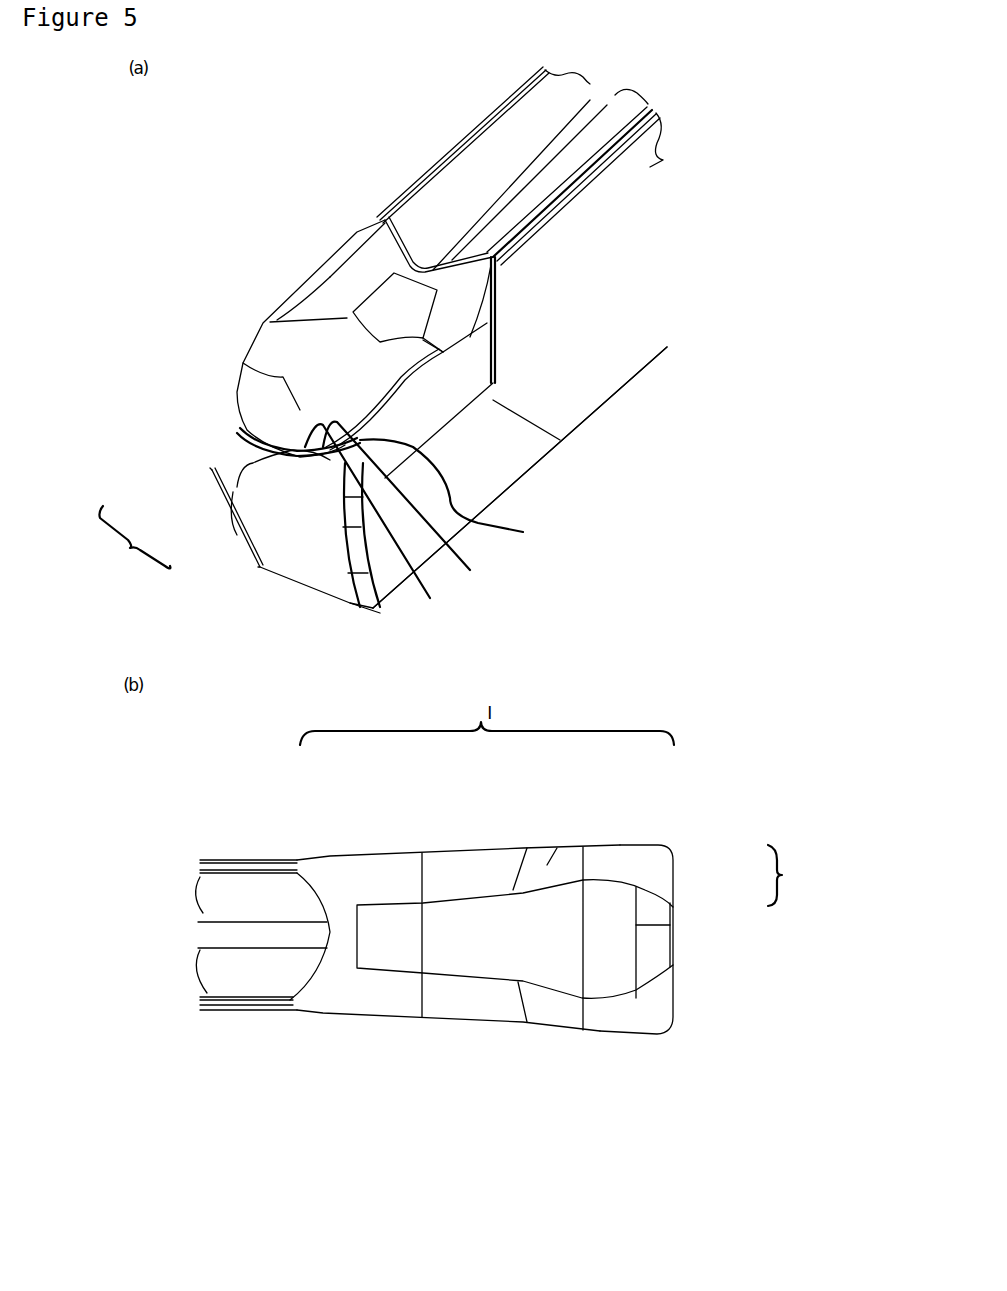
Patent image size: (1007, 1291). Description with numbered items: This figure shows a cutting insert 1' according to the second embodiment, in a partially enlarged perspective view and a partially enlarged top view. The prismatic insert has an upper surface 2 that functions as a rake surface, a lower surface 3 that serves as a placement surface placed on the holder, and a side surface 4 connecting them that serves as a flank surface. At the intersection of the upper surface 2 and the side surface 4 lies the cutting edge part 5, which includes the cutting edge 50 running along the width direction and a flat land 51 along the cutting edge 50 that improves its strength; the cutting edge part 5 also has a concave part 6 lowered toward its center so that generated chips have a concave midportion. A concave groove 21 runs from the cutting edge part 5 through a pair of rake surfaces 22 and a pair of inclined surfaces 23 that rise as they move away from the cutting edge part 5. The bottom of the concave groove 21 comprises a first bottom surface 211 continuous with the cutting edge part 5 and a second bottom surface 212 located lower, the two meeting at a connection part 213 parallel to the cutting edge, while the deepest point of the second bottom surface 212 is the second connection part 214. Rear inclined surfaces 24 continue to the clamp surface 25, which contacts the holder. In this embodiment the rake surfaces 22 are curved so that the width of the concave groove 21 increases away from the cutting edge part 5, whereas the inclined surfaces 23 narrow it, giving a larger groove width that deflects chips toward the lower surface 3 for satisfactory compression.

The cutting insert 1' is at (477, 549).
The upper surface 2 is at (262, 296).
The concave groove 21 is at (343, 367).
The rake surface 22 is at (220, 403).
The inclined surface 23 is at (288, 337).
The rear inclined surface 24 is at (457, 307).
The clamp surface 25 is at (523, 178).
The first bottom surface 211 is at (733, 1030).
The second bottom surface 212 is at (733, 1063).
The connection part 213 is at (235, 418).
The second connection part 214 is at (270, 387).
The lower surface 3 is at (517, 487).
The side surface 4 is at (585, 320).
The cutting edge part 5 is at (448, 706).
The cutting edge 50 is at (185, 450).
The land 51 is at (243, 497).
The concave part 6 is at (247, 543).